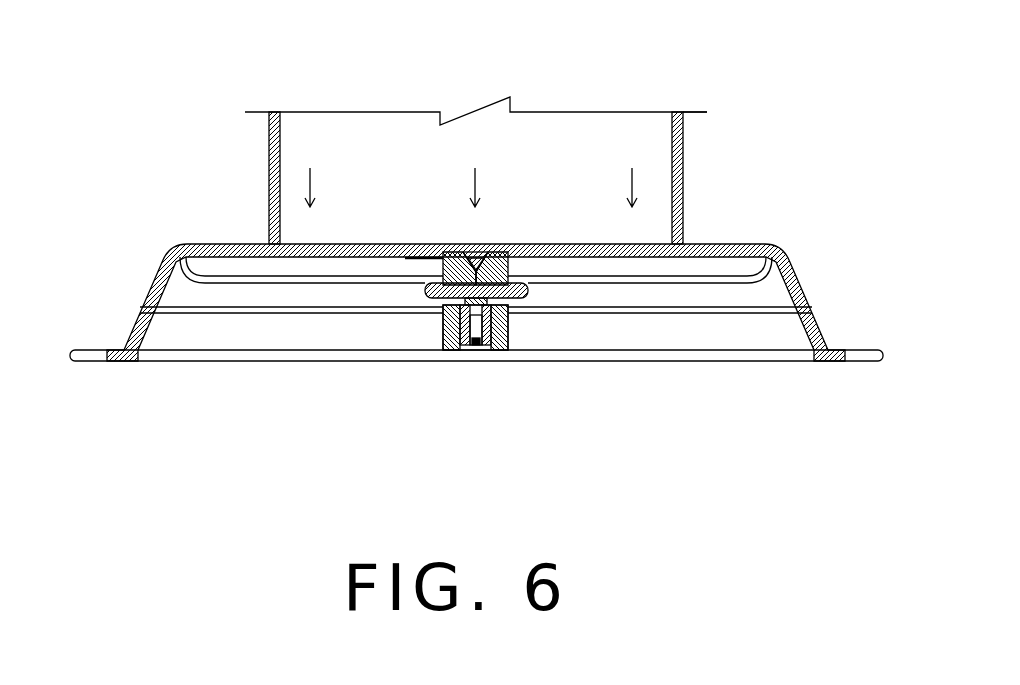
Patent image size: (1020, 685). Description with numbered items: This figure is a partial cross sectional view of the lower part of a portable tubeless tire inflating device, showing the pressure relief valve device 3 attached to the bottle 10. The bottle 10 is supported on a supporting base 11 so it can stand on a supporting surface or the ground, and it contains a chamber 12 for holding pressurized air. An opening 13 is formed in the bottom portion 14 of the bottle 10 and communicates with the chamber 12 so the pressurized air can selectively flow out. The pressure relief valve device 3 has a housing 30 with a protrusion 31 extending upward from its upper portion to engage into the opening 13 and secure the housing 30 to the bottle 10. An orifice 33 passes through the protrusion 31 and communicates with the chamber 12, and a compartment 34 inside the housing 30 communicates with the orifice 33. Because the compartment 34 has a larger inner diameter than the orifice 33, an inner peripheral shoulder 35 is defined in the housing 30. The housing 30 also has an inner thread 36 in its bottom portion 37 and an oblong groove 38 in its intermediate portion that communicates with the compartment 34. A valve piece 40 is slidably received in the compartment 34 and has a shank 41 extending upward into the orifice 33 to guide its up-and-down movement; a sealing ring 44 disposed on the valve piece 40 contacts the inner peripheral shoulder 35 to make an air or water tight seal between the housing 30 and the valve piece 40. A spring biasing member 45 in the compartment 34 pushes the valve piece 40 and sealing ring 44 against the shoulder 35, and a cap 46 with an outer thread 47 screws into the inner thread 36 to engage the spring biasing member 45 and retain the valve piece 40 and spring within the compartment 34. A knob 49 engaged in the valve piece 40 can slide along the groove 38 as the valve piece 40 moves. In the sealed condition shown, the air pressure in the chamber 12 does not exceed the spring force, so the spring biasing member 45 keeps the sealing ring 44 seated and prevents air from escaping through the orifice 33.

The pressure relief valve device 3 is at (517, 347).
The bottle 10 is at (683, 170).
The supporting base 11 is at (800, 270).
The chamber 12 is at (672, 122).
The opening 13 is at (413, 250).
The bottom portion 14 is at (268, 243).
The housing 30 is at (510, 263).
The protrusion 31 is at (441, 268).
The orifice 33 is at (472, 253).
The compartment 34 is at (496, 264).
The inner peripheral shoulder 35 is at (412, 257).
The inner thread 36 is at (508, 330).
The bottom portion 37 is at (453, 352).
The groove 38 is at (445, 322).
The valve piece 40 is at (425, 292).
The shank 41 is at (478, 258).
The sealing ring 44 is at (488, 262).
The spring biasing member 45 is at (455, 308).
The cap 46 is at (488, 351).
The outer thread 47 is at (463, 351).
The knob 49 is at (528, 291).